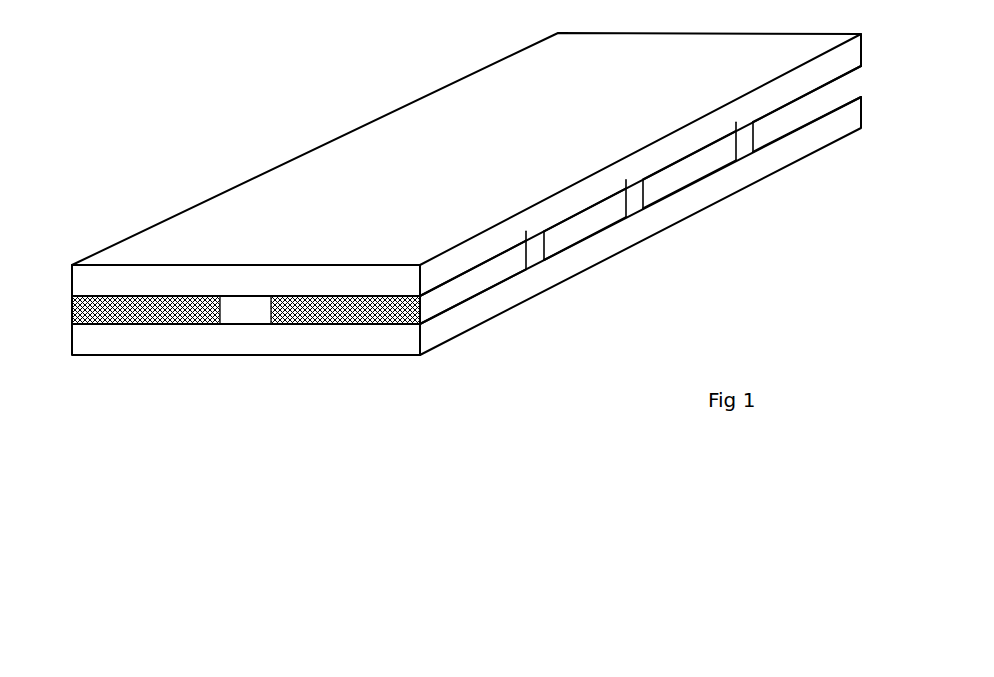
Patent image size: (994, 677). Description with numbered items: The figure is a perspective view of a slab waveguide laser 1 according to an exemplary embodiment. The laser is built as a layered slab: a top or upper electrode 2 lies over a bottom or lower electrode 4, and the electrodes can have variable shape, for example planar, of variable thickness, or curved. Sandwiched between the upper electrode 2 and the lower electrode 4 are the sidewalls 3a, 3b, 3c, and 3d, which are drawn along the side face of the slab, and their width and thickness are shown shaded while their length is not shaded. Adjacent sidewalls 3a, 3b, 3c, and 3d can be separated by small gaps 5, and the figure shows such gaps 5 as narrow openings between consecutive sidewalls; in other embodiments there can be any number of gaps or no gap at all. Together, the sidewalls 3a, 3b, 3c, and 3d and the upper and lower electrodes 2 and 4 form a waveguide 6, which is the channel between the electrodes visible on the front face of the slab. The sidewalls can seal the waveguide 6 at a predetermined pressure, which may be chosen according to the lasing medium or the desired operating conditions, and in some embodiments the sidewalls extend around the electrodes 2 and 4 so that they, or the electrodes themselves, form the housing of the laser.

The slab waveguide laser 1 is at (264, 66).
The upper electrode 2 is at (145, 273).
The sidewall 3a is at (463, 289).
The sidewall 3b is at (587, 223).
The sidewall 3c is at (697, 169).
The sidewall 3d is at (786, 115).
The lower electrode 4 is at (351, 339).
The gap 5 is at (532, 258).
The waveguide 6 is at (240, 314).